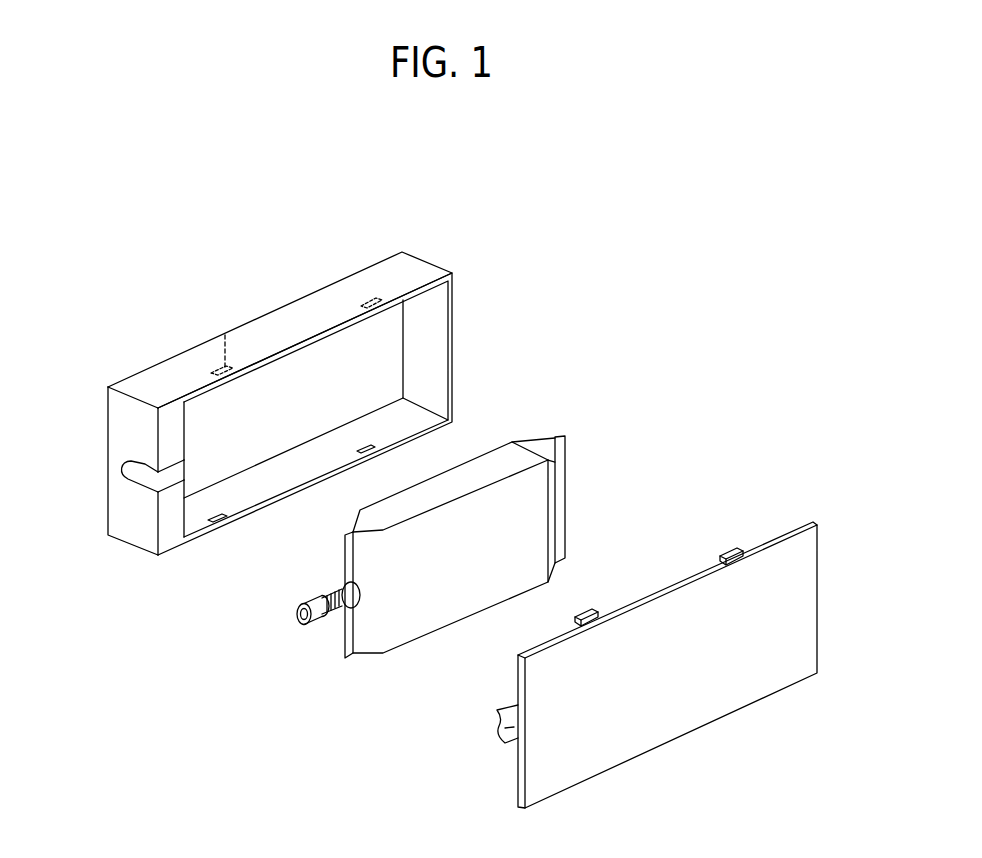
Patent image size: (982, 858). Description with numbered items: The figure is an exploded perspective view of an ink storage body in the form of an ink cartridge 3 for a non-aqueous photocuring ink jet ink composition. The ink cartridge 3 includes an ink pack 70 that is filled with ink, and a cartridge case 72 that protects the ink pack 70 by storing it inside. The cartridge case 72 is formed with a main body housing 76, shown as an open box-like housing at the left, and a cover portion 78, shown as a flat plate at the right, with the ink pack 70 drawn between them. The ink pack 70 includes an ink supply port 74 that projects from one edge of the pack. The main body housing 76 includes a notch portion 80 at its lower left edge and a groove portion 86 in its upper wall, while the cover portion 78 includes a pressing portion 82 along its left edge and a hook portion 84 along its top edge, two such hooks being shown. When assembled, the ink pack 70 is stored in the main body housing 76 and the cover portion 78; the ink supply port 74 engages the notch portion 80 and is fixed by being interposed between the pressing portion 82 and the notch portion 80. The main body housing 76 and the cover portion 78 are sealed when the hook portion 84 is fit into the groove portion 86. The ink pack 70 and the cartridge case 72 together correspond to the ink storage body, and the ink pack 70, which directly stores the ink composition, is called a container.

The ink cartridge 3 is at (548, 173).
The ink pack 70 is at (497, 443).
The cartridge case 72 is at (778, 241).
The ink supply port 74 is at (318, 625).
The main body housing 76 is at (437, 265).
The cover portion 78 is at (819, 535).
The notch portion 80 is at (126, 472).
The pressing portion 82 is at (512, 728).
The hook portion 84 is at (585, 609).
The groove portion 86 is at (368, 300).